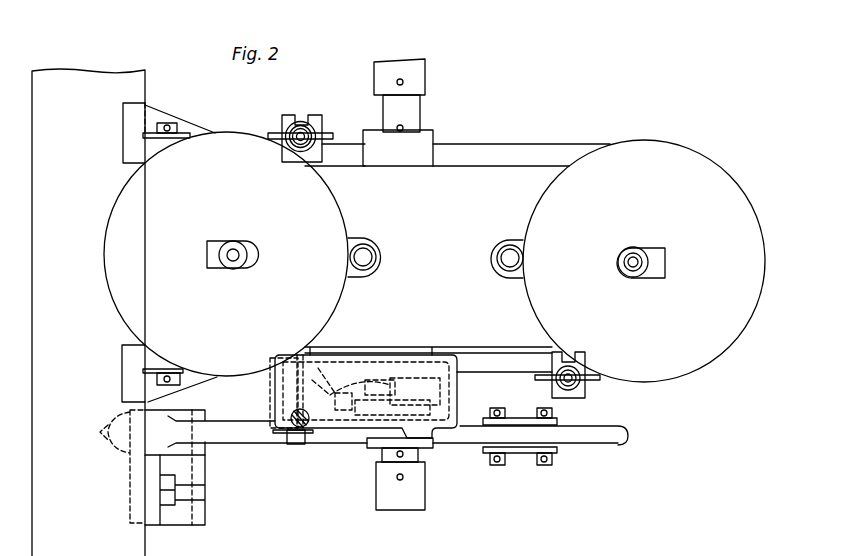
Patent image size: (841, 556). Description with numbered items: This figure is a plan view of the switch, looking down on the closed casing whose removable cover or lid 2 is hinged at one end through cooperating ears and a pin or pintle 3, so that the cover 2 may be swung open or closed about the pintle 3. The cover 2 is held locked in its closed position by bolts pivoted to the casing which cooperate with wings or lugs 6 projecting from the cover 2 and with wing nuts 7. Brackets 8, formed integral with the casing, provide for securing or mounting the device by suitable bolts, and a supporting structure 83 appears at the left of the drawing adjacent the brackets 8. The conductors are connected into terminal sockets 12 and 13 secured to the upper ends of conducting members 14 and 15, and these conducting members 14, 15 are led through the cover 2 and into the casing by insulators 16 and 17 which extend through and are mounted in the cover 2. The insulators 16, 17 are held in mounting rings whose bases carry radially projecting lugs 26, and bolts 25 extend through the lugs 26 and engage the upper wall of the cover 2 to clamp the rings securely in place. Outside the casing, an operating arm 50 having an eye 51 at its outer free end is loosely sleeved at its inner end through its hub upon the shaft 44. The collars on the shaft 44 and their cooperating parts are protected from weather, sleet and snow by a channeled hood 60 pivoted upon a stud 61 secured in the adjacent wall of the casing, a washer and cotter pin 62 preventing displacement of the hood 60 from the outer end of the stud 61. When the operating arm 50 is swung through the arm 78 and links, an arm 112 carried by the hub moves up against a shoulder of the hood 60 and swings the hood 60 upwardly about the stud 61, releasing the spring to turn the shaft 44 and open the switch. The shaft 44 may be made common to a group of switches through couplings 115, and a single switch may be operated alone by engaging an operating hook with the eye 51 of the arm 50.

The wall 83 is at (93, 83).
The brackets 8 is at (128, 118).
The pin or pintle 3 is at (163, 124).
The insulator 16 is at (237, 214).
The conducting member 14 is at (205, 250).
The terminal socket 12 is at (228, 268).
The bolts 25 is at (367, 255).
The lugs 26 is at (376, 268).
The insulator 17 is at (645, 222).
The conducting member 15 is at (623, 258).
The terminal socket 13 is at (625, 280).
The cover or lid 2 is at (503, 190).
The wing nuts 7 is at (285, 133).
The wings or lugs 6 is at (310, 121).
The couplings 115 is at (415, 75).
The shaft 44 is at (412, 113).
The channeled hood 60 is at (347, 372).
The arm 112 is at (312, 347).
The stud 61 is at (301, 429).
The washer and cotter pin 62 is at (290, 440).
The arm 78 is at (228, 440).
The eye 51 is at (628, 440).
The operating arm 50 is at (503, 440).